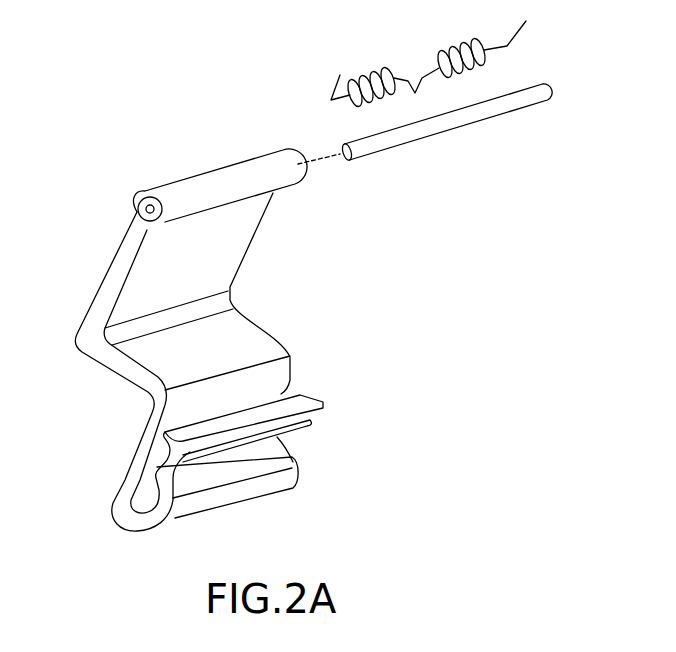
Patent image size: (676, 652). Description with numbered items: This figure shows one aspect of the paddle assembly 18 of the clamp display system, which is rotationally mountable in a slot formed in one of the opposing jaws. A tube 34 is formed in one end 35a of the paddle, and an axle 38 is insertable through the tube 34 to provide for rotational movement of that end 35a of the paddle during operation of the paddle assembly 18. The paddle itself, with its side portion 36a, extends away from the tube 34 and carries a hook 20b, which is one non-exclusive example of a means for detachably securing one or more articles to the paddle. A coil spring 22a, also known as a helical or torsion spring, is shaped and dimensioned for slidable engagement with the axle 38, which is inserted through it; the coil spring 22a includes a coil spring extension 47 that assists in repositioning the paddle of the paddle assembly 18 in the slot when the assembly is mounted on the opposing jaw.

The paddle assembly 18 is at (340, 268).
The one end of the paddle 35a is at (203, 168).
The tube 34 is at (143, 210).
The side arm 36a is at (90, 342).
The hook 20b is at (298, 461).
The axle 38 is at (472, 123).
The coil spring extension 47 is at (425, 77).
The coil spring 22a is at (527, 36).